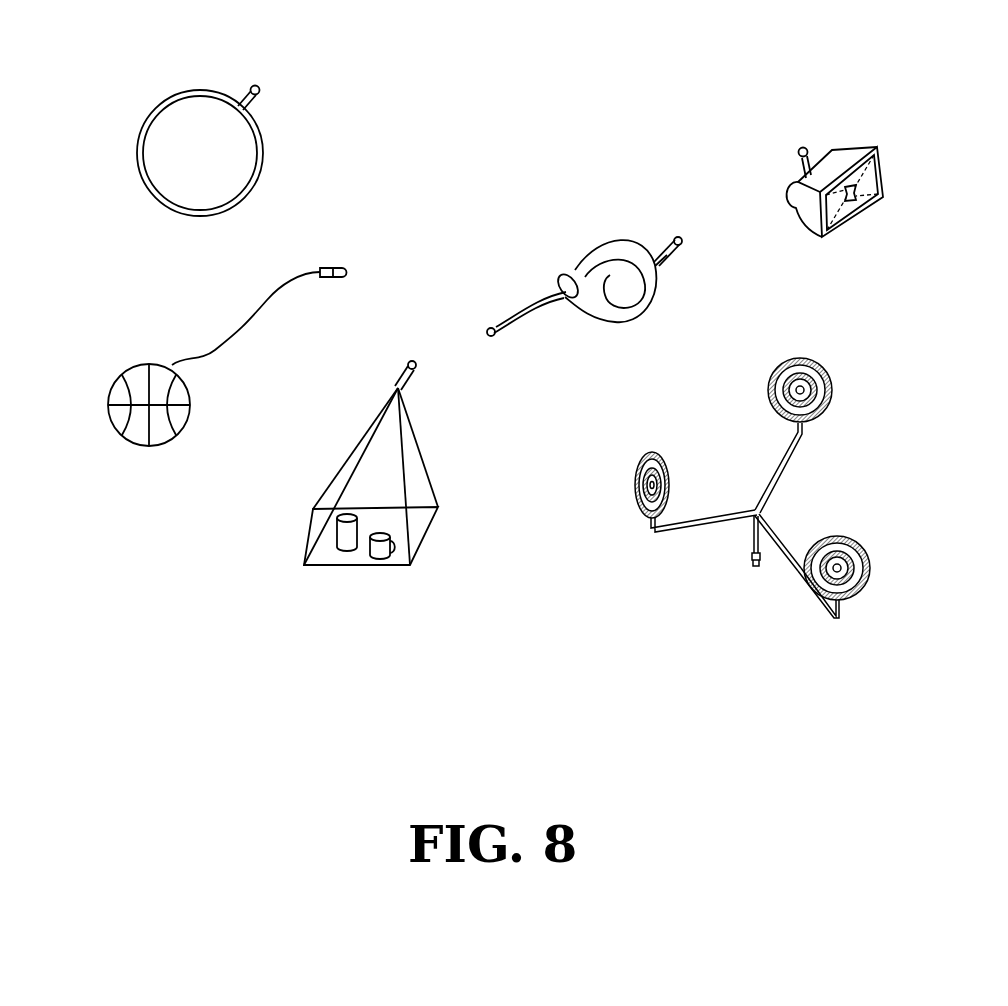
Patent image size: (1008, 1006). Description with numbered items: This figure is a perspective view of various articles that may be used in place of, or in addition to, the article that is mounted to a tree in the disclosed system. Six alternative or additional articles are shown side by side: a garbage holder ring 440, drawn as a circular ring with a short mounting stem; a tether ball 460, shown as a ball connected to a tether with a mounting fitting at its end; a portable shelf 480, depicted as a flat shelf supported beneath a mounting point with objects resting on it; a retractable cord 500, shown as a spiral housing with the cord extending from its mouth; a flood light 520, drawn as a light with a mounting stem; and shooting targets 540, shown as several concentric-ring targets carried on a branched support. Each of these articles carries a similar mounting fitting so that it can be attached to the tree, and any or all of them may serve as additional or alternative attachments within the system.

The garbage holder ring 440 is at (150, 85).
The tether ball 460 is at (99, 457).
The portable shelf 480 is at (300, 595).
The retractable cord 500 is at (550, 246).
The flood light 520 is at (778, 128).
The shooting targets 540 is at (690, 592).